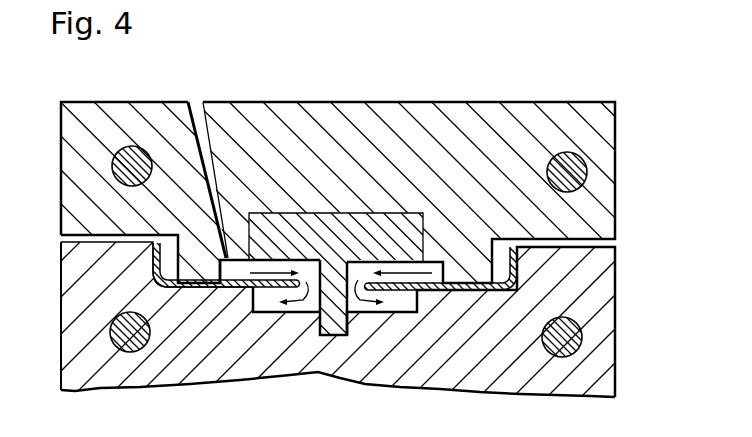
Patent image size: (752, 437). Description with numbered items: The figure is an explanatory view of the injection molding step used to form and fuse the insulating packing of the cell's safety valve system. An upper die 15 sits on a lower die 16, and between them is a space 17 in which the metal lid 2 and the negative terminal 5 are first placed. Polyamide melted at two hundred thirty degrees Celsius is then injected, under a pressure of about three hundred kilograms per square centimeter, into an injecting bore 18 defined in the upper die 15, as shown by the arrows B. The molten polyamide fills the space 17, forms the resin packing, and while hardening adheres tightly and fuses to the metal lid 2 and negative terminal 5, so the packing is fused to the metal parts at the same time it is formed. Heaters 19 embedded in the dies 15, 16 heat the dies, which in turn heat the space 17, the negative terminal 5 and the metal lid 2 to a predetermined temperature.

The upper die 15 is at (579, 102).
The lower die 16 is at (618, 362).
The negative terminal 5 is at (345, 213).
The metal lid 2 is at (500, 247).
The space 17 is at (445, 271).
The injecting bore 18 is at (199, 115).
The arrows B is at (233, 272).
The heaters 19 is at (131, 146).